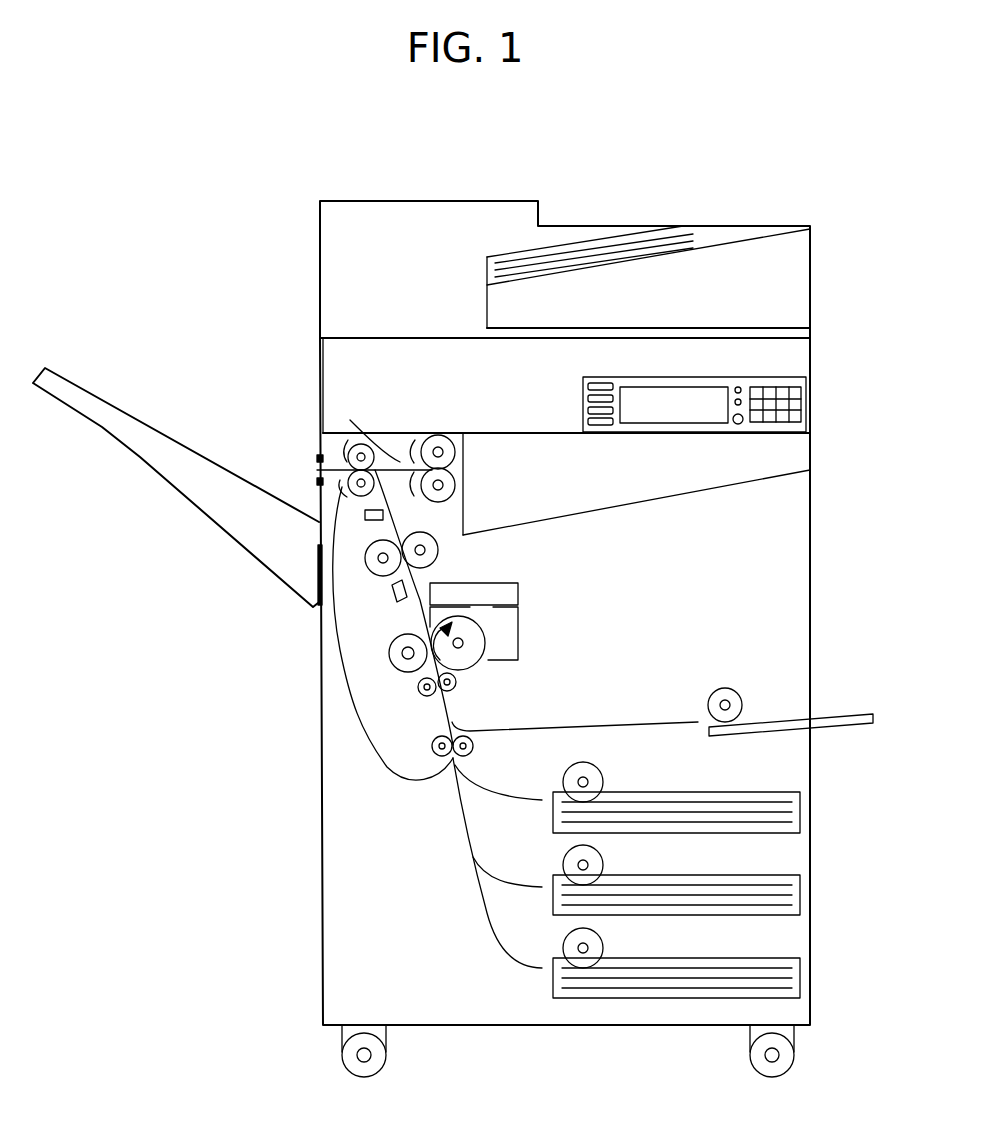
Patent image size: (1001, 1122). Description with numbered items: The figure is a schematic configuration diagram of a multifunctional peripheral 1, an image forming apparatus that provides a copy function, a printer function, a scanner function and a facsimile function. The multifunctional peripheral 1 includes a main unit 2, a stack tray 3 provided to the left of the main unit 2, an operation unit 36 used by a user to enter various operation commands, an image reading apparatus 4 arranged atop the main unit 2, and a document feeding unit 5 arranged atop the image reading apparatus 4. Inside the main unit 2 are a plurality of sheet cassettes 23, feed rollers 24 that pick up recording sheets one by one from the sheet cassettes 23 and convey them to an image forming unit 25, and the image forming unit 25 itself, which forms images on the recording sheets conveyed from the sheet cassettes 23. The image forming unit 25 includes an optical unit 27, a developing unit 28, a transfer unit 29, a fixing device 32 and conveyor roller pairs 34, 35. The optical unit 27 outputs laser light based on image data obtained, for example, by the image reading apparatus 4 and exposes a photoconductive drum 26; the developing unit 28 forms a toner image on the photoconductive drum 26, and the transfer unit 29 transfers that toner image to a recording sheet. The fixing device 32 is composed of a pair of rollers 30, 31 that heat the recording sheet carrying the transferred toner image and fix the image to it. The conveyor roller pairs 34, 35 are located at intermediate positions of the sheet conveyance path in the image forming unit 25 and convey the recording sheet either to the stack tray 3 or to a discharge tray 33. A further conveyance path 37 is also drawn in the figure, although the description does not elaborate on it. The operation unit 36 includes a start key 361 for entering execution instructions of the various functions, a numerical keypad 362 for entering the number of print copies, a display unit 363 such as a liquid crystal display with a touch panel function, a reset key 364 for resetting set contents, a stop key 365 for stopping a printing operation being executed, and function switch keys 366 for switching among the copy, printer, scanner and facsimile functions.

The multifunctional peripheral 1 is at (103, 198).
The main unit 2 is at (765, 622).
The stack tray 3 is at (228, 539).
The image reading apparatus 4 is at (348, 372).
The document feeding unit 5 is at (603, 228).
The sheet cassettes 23 is at (797, 817).
The feed rollers 24 is at (600, 783).
The image forming unit 25 is at (343, 717).
The photoconductive drum 26 is at (478, 666).
The optical unit 27 is at (520, 597).
The developing unit 28 is at (521, 650).
The transfer unit 29 is at (405, 668).
The roller 30 is at (380, 533).
The roller 31 is at (438, 553).
The fixing device 32 is at (540, 530).
The discharge tray 33 is at (633, 505).
The conveyor roller pair 34 is at (352, 447).
The conveyor roller pair 35 is at (350, 475).
The operation unit 36 is at (820, 407).
The reverse conveyance path 37 is at (378, 637).
The start key 361 is at (737, 428).
The numerical keypad 362 is at (762, 424).
The display unit 363 is at (650, 400).
The reset key 364 is at (745, 378).
The stop key 365 is at (737, 388).
The function switch keys 366 is at (588, 412).